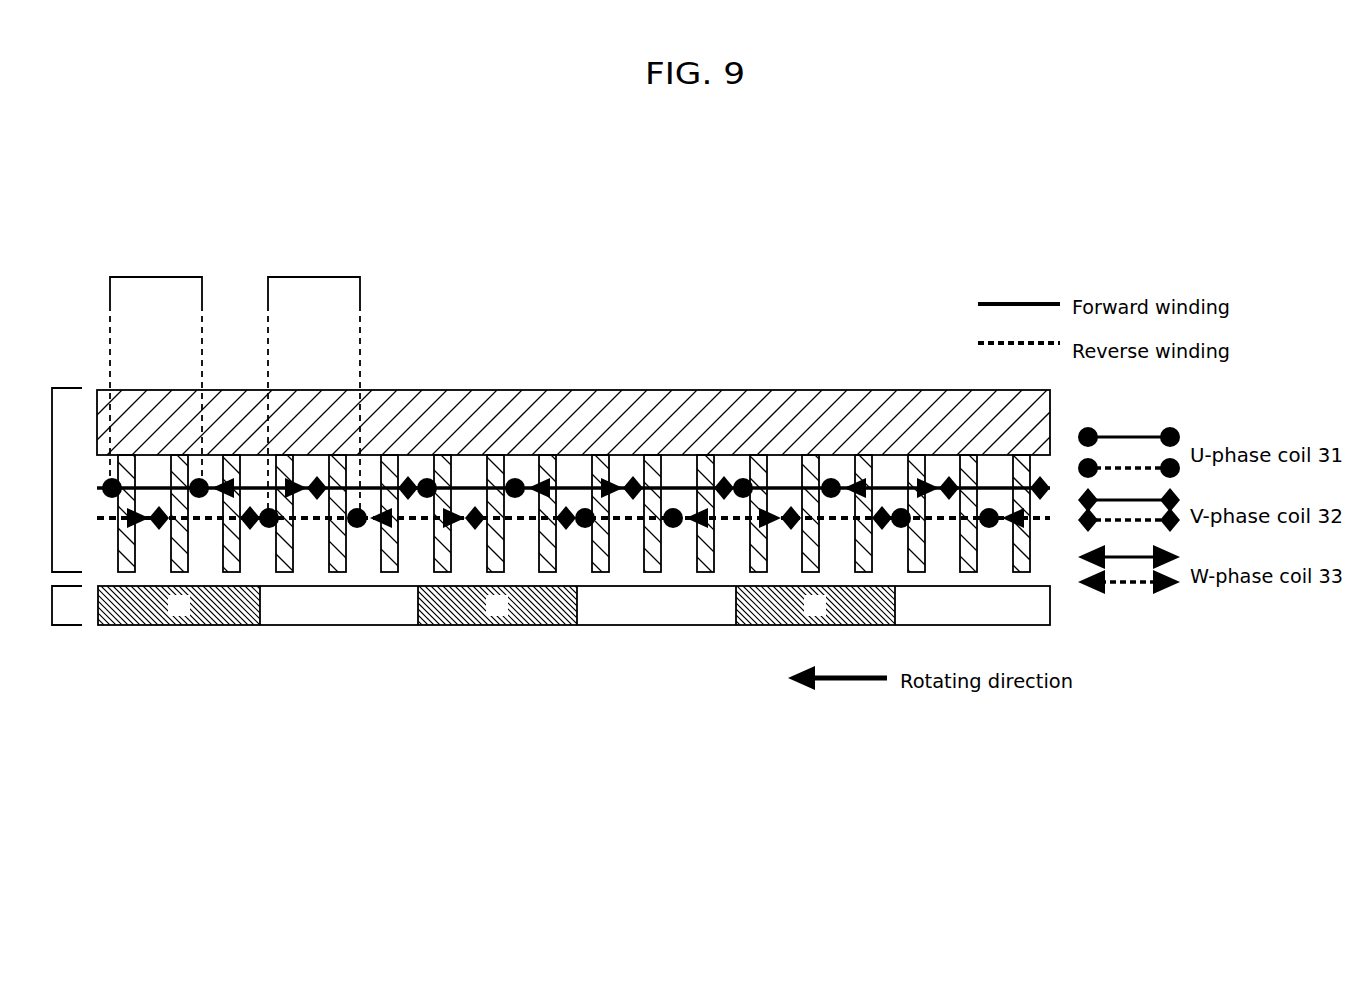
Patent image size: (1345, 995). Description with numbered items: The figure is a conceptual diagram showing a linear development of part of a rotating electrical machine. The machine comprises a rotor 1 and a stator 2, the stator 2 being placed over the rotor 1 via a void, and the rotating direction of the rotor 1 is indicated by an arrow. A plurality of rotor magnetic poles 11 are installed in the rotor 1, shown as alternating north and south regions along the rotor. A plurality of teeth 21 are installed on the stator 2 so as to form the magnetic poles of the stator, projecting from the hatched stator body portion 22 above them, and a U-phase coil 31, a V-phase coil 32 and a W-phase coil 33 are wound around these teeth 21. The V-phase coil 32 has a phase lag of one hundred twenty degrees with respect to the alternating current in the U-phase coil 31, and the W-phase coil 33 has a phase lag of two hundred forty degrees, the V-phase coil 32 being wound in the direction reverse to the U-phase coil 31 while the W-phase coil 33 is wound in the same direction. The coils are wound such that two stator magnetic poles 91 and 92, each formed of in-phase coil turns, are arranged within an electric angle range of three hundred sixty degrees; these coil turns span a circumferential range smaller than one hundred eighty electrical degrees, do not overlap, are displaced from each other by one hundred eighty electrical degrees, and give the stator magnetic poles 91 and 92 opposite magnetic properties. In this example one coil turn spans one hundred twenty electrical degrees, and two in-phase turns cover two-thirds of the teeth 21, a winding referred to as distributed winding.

The rotor 1 is at (539, 605).
The stator 2 is at (55, 480).
The rotor magnetic pole 11 is at (547, 625).
The tooth 21 is at (756, 477).
The yoke 22 is at (659, 424).
The U-phase coil 31 is at (143, 487).
The V-phase coil 32 is at (362, 515).
The W-phase coil 33 is at (255, 510).
The stator magnetic pole 91 is at (156, 365).
The stator magnetic pole 92 is at (314, 383).